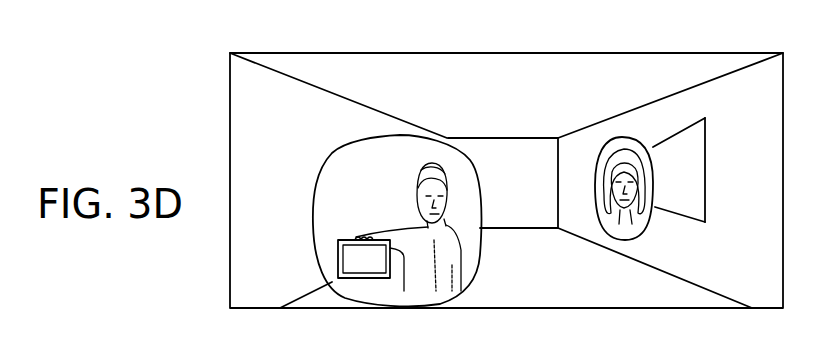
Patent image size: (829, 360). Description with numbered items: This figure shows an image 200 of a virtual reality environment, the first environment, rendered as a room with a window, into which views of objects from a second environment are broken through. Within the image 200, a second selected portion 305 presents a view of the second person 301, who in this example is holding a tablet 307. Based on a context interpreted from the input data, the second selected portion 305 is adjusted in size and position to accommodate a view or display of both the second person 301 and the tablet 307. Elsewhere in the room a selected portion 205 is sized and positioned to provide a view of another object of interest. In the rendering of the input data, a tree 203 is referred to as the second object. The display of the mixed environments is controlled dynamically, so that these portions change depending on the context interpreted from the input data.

The image 200 is at (278, 300).
The tree 203 is at (630, 145).
The selected portion 205 is at (608, 143).
The second person 301 is at (430, 162).
The second selected portion 305 is at (348, 145).
The tablet 307 is at (389, 280).